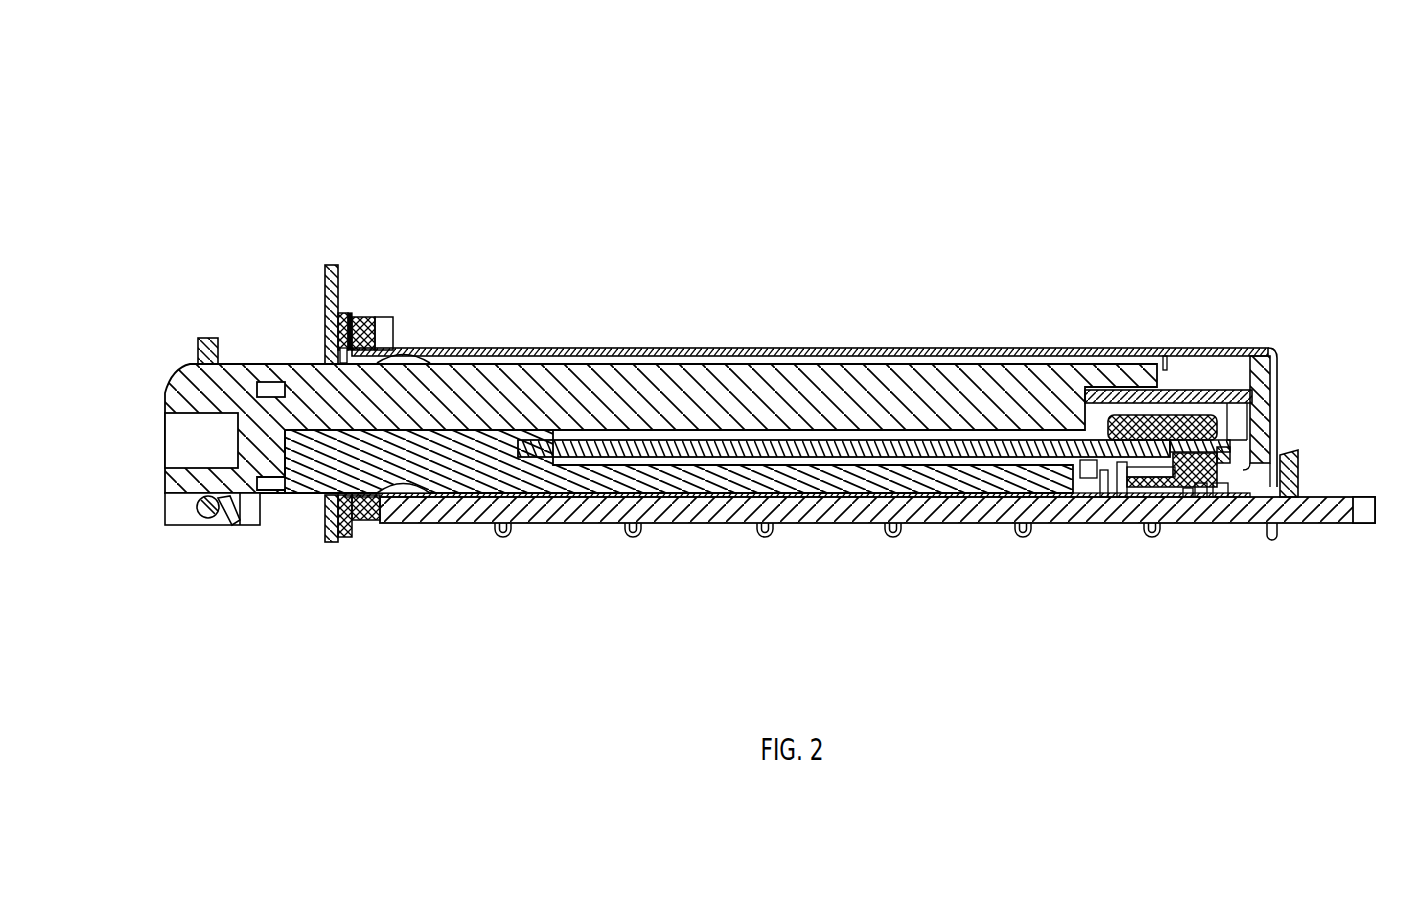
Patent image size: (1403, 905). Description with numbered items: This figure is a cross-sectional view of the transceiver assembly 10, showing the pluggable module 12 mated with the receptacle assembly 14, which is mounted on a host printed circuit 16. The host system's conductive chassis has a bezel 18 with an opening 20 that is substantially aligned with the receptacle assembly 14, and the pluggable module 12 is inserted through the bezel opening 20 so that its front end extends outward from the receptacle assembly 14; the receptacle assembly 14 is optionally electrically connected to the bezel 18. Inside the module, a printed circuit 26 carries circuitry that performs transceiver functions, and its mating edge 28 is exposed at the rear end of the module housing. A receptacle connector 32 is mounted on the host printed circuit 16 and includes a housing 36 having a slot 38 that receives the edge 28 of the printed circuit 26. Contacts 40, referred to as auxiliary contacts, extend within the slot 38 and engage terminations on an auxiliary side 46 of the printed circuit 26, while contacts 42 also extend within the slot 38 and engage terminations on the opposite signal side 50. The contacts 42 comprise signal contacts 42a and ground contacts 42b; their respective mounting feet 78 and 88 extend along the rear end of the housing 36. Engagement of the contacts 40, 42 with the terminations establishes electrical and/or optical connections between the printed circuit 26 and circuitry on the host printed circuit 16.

The transceiver assembly 10 is at (1197, 177).
The pluggable module 12 is at (767, 389).
The receptacle assembly 14 is at (899, 313).
The host printed circuit 16 is at (678, 523).
The bezel 18 is at (335, 265).
The opening 20 is at (327, 357).
The printed circuit 26 is at (712, 443).
The edge 28 is at (1184, 454).
The receptacle connector 32 is at (1164, 423).
The housing 36 is at (1180, 470).
The slot 38 is at (1095, 436).
The contacts 40 is at (1087, 483).
The contacts 42 is at (1218, 487).
The signal contacts 42a is at (1190, 502).
The ground contacts 42b is at (1213, 493).
The side 46 is at (883, 460).
The side 50 is at (988, 440).
The mounting feet 78 is at (1200, 500).
The mounting feet 88 is at (1225, 483).